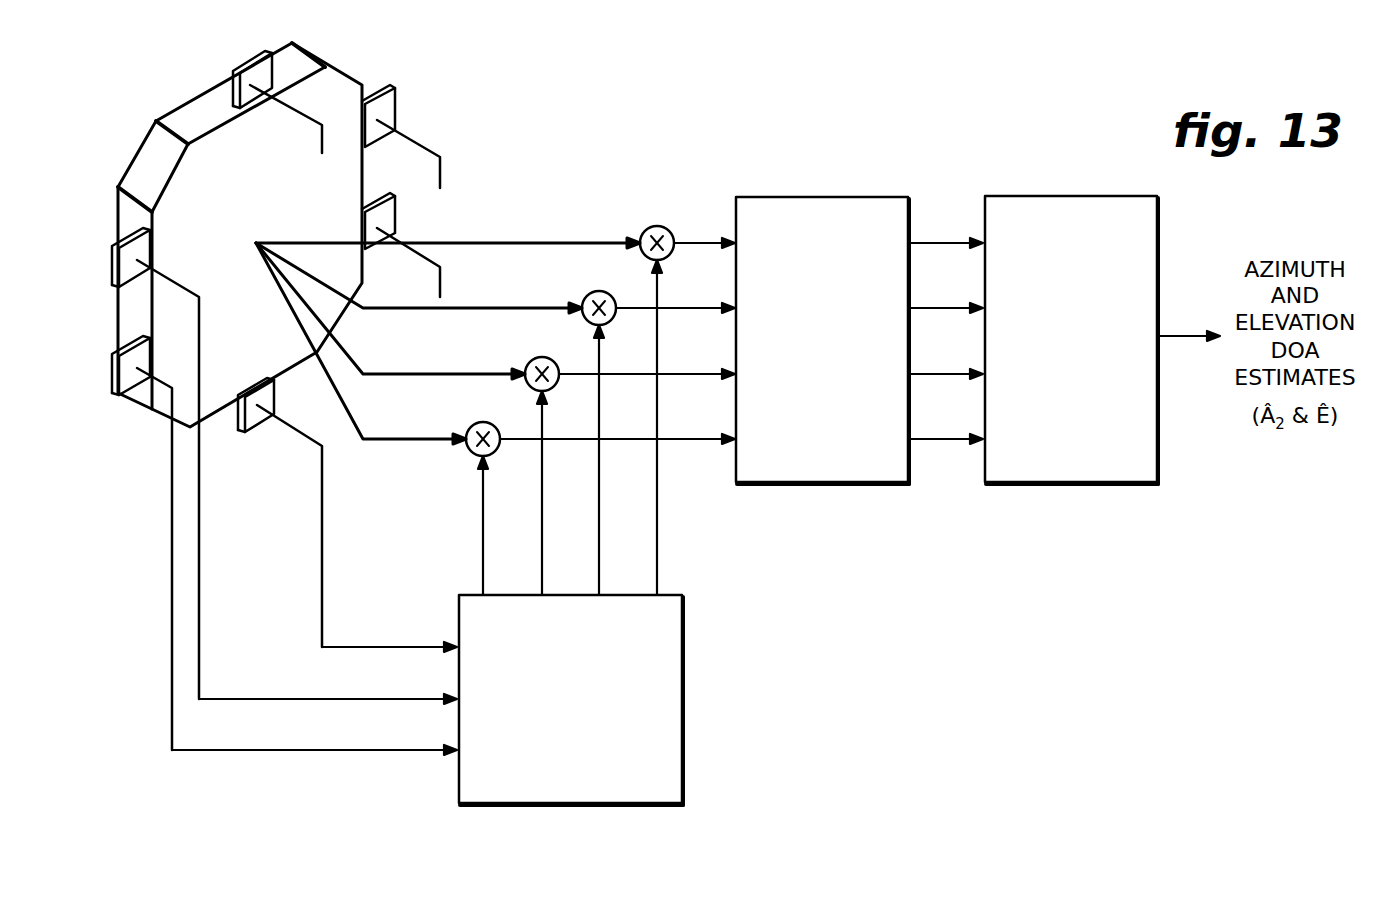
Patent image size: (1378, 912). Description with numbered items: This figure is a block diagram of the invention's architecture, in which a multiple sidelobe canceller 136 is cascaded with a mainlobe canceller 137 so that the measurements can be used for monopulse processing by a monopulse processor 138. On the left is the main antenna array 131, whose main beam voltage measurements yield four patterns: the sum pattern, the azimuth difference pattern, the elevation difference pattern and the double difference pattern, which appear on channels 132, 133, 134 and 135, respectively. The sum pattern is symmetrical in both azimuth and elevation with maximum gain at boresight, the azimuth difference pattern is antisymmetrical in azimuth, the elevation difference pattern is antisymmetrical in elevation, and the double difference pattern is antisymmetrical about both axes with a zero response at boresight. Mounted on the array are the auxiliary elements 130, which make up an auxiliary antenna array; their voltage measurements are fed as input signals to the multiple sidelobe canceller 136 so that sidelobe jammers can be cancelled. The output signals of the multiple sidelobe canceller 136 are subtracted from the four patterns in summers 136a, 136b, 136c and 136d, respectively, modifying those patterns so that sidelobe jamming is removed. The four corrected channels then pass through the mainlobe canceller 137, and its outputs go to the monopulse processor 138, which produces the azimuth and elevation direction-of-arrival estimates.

The auxiliary antenna elements 130 is at (238, 68).
The main antenna array 131 is at (345, 68).
The sum channel 132 is at (537, 242).
The azimuth difference channel 133 is at (525, 307).
The elevation difference channel 134 is at (463, 373).
The double difference channel 135 is at (418, 442).
The multiple sidelobe canceller 136 is at (483, 803).
The summer 136a is at (657, 225).
The summer 136b is at (583, 297).
The summer 136c is at (530, 358).
The summer 136d is at (468, 427).
The mainlobe canceller 137 is at (858, 197).
The monopulse processor 138 is at (1048, 195).